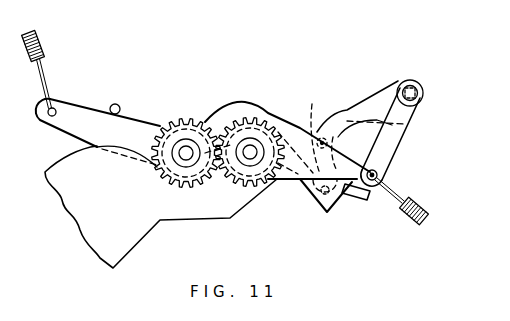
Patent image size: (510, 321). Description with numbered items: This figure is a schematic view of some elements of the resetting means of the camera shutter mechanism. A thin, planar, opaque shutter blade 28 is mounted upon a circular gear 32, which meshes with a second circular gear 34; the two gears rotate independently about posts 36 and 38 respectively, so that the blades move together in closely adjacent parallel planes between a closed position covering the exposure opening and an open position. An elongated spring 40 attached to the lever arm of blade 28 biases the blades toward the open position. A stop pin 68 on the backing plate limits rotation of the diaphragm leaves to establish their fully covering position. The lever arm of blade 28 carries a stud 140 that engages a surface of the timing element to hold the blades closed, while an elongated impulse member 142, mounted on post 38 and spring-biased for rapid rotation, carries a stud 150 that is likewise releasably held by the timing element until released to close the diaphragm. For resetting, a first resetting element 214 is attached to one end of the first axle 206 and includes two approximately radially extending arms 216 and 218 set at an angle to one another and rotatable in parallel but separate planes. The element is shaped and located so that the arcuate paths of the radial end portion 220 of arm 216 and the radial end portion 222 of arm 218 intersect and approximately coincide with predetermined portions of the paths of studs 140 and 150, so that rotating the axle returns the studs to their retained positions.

The shutter blade 28 is at (123, 239).
The circular gear 32 is at (264, 113).
The circular gear 34 is at (183, 118).
The post 36 is at (250, 147).
The post 38 is at (185, 147).
The elongated spring 40 is at (421, 204).
The stop pin 68 is at (116, 105).
The stud 140 is at (315, 128).
The impulse member 142 is at (134, 137).
The stud 150 is at (300, 187).
The first axle 206 is at (421, 87).
The first resetting element 214 is at (402, 123).
The arm 216 is at (388, 147).
The arm 218 is at (350, 109).
The radial end portion 220 is at (365, 198).
The radial end portion 222 is at (328, 213).